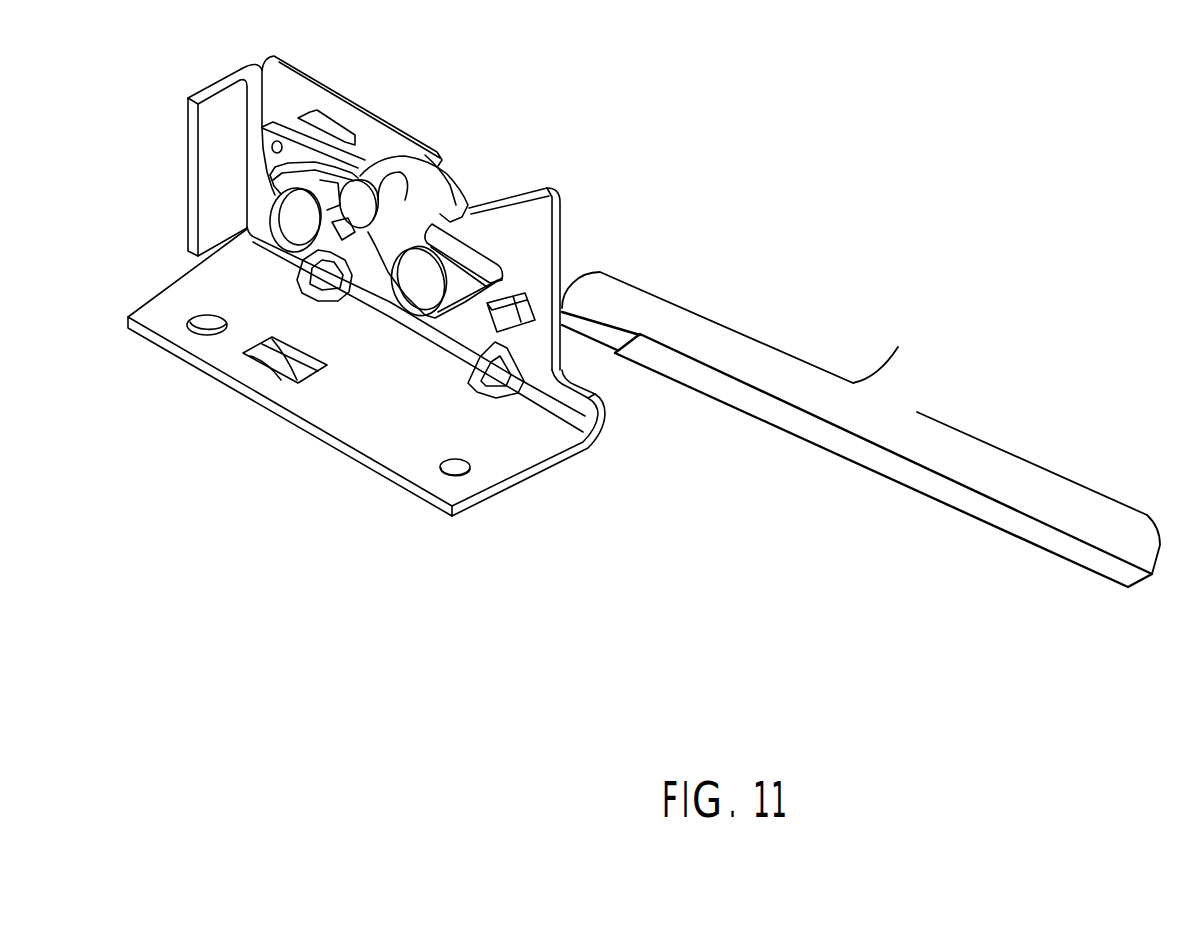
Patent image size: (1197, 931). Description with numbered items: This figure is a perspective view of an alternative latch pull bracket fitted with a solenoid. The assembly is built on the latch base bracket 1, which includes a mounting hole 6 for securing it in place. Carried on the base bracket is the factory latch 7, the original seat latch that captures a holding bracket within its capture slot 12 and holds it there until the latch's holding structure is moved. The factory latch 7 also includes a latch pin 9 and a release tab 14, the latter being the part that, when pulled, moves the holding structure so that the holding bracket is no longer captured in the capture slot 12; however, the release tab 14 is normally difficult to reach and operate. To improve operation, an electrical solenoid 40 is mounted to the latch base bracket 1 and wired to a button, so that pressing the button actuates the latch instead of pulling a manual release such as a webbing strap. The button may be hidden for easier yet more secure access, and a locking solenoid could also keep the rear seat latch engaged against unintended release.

The latch base bracket 1 is at (363, 413).
The mounting hole 6 is at (447, 468).
The factory latch 7 is at (525, 205).
The latch pin 9 is at (358, 200).
The capture slot 12 is at (447, 200).
The release tab 14 is at (223, 155).
The electrical solenoid 40 is at (917, 412).